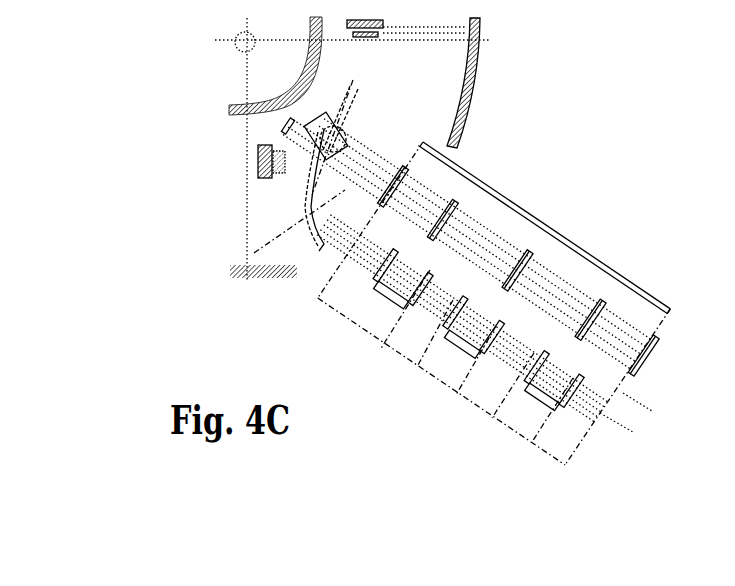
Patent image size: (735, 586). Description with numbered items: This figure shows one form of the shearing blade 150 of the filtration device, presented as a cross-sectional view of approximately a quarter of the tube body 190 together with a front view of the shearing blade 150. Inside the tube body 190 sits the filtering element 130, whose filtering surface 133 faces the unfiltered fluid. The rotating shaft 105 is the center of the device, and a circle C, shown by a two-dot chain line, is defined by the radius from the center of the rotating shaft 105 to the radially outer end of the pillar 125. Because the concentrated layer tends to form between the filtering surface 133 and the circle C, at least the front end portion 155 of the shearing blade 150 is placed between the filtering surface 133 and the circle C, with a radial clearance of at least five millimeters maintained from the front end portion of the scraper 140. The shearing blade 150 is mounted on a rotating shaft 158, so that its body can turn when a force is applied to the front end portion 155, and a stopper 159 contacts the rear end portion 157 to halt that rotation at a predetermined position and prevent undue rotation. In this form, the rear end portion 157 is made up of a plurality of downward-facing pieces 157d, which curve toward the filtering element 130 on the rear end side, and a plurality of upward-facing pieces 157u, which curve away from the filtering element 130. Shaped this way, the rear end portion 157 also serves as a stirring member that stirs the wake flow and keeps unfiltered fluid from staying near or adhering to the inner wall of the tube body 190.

The rotating shaft 105 is at (242, 46).
The filtering element 130 is at (310, 25).
The filtering surface 133 is at (320, 72).
The pillar 125 is at (383, 30).
The tube body 190 is at (482, 56).
The front end portion 155 is at (352, 90).
The shearing blade 150 is at (370, 118).
The rotating shaft 158 is at (336, 140).
The scraper 140 is at (293, 128).
The stopper 159 is at (316, 165).
The circle C is at (258, 180).
The rear end portion 157 is at (300, 317).
The upward-facing pieces 157u is at (313, 235).
The downward-facing pieces 157d is at (248, 264).